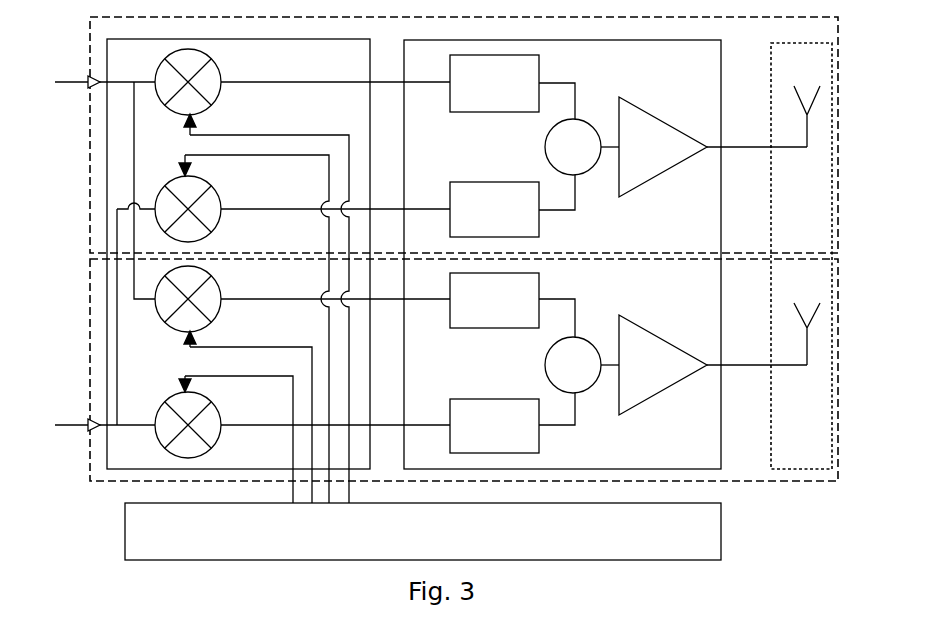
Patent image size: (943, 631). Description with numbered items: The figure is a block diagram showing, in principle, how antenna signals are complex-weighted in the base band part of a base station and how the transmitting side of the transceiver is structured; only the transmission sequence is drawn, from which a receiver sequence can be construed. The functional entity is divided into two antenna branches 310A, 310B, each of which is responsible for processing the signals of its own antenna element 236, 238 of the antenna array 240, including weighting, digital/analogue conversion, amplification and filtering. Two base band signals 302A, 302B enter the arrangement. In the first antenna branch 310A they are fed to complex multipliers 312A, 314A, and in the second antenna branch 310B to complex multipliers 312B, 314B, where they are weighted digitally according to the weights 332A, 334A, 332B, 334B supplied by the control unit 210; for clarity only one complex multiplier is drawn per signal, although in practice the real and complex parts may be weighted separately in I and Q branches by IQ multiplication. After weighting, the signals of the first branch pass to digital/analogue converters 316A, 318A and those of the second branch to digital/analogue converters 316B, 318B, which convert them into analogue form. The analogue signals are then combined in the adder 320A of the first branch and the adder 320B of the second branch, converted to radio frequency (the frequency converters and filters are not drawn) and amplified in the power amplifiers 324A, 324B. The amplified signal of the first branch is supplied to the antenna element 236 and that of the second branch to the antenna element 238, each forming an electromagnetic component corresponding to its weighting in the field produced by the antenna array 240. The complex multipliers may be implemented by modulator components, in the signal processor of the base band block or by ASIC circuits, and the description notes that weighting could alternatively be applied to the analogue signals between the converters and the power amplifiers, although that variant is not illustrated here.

The control unit 210 is at (125, 550).
The antenna element 236 is at (817, 88).
The antenna element 238 is at (817, 305).
The antenna array 240 is at (771, 448).
The antenna signal 302A is at (57, 79).
The antenna signal 302B is at (57, 422).
The antenna branch 310A is at (90, 147).
The antenna branch 310B is at (90, 351).
The complex multiplier 312A is at (215, 58).
The complex multiplier 314A is at (215, 228).
The complex multiplier 312B is at (215, 276).
The complex multiplier 314B is at (215, 449).
The digital/analogue converter 316A is at (539, 63).
The digital/analogue converter 318A is at (539, 231).
The digital/analogue converter 316B is at (539, 281).
The digital/analogue converter 318B is at (539, 449).
The adder 320A is at (545, 147).
The adder 320B is at (545, 365).
The power amplifier 324A is at (626, 102).
The power amplifier 324B is at (626, 318).
The weight 332A is at (228, 135).
The weight 334A is at (222, 155).
The weight 332B is at (222, 347).
The weight 334B is at (212, 378).